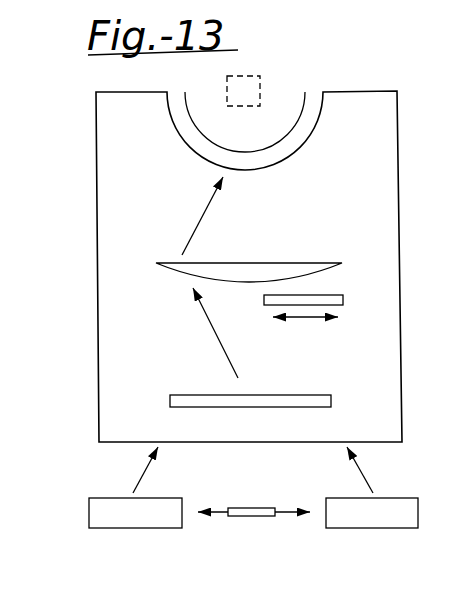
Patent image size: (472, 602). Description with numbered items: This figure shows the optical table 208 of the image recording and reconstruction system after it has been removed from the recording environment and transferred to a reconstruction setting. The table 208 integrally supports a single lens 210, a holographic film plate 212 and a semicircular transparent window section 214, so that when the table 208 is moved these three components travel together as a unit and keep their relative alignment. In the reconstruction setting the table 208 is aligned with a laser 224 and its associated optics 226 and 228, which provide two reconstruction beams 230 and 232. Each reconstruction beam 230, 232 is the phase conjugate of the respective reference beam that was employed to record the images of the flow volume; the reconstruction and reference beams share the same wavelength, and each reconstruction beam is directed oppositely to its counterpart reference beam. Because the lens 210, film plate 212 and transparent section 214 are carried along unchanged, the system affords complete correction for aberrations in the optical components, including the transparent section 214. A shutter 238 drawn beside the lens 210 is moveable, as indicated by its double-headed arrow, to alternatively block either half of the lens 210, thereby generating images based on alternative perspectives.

The optical table 208 is at (96, 170).
The transparent window section 214 is at (299, 148).
The lens 210 is at (302, 263).
The holographic film plate 212 is at (277, 407).
The shutter 238 is at (268, 306).
The reconstruction beam 232 is at (145, 473).
The reconstruction beam 230 is at (362, 472).
The optics 226 is at (127, 528).
The optics 228 is at (382, 528).
The laser 224 is at (243, 516).